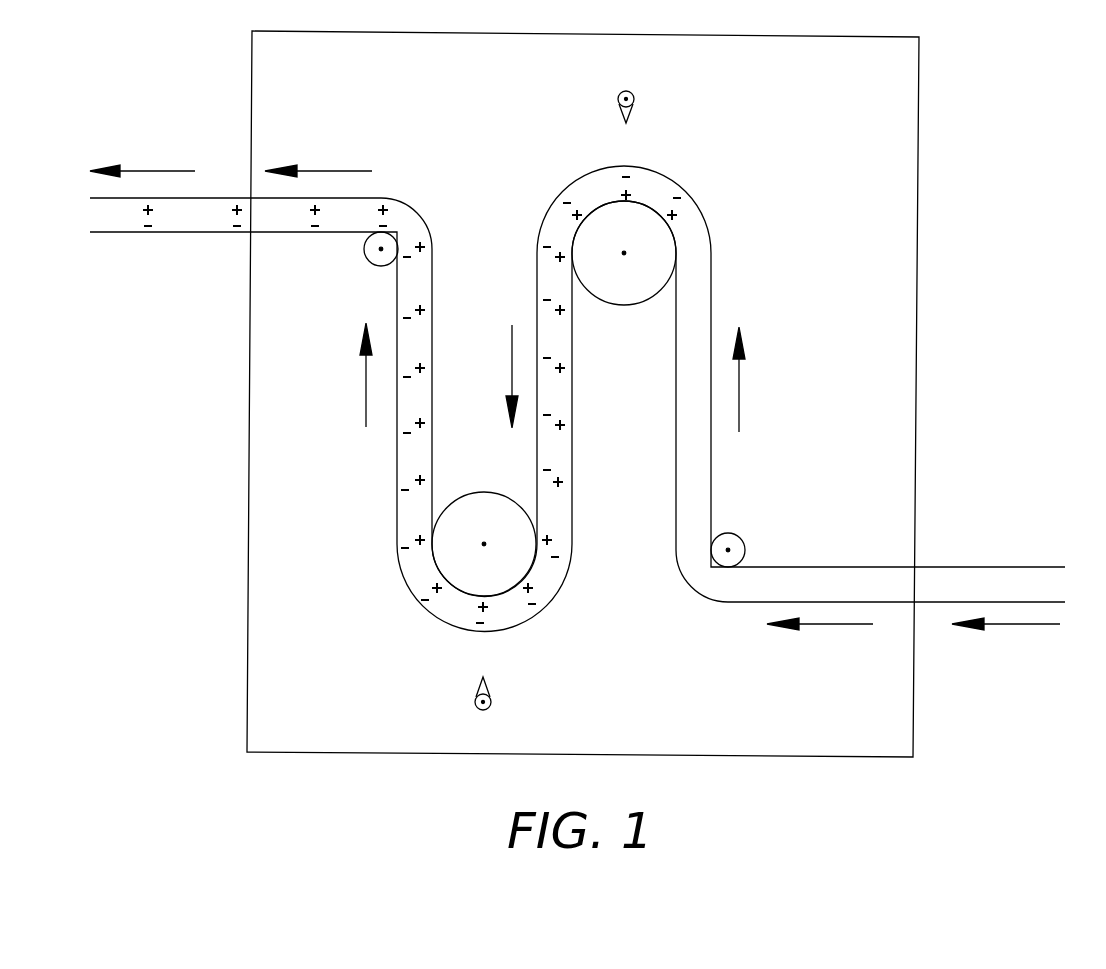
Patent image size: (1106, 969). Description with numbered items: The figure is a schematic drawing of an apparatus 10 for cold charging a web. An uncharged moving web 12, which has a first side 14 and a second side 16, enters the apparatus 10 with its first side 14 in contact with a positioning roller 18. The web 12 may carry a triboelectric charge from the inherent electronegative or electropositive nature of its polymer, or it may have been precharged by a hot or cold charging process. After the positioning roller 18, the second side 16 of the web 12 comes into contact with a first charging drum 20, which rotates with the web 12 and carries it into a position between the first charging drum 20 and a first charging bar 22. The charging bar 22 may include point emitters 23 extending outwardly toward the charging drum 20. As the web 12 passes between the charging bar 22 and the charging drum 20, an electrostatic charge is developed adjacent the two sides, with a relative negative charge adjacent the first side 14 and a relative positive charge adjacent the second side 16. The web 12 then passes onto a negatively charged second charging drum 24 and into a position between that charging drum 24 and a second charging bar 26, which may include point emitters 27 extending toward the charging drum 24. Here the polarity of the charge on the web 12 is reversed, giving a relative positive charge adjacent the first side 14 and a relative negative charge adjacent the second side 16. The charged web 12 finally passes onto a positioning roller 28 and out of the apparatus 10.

The apparatus 10 is at (862, 720).
The web 12 is at (1000, 586).
The first side 14 is at (218, 198).
The second side 16 is at (185, 233).
The positioning roller 18 is at (745, 549).
The first charging drum 20 is at (622, 290).
The first charging bar 22 is at (633, 96).
The point emitters 23 is at (633, 117).
The second charging drum 24 is at (475, 512).
The second charging bar 26 is at (475, 703).
The point emitters 27 is at (476, 690).
The positioning roller 28 is at (366, 256).